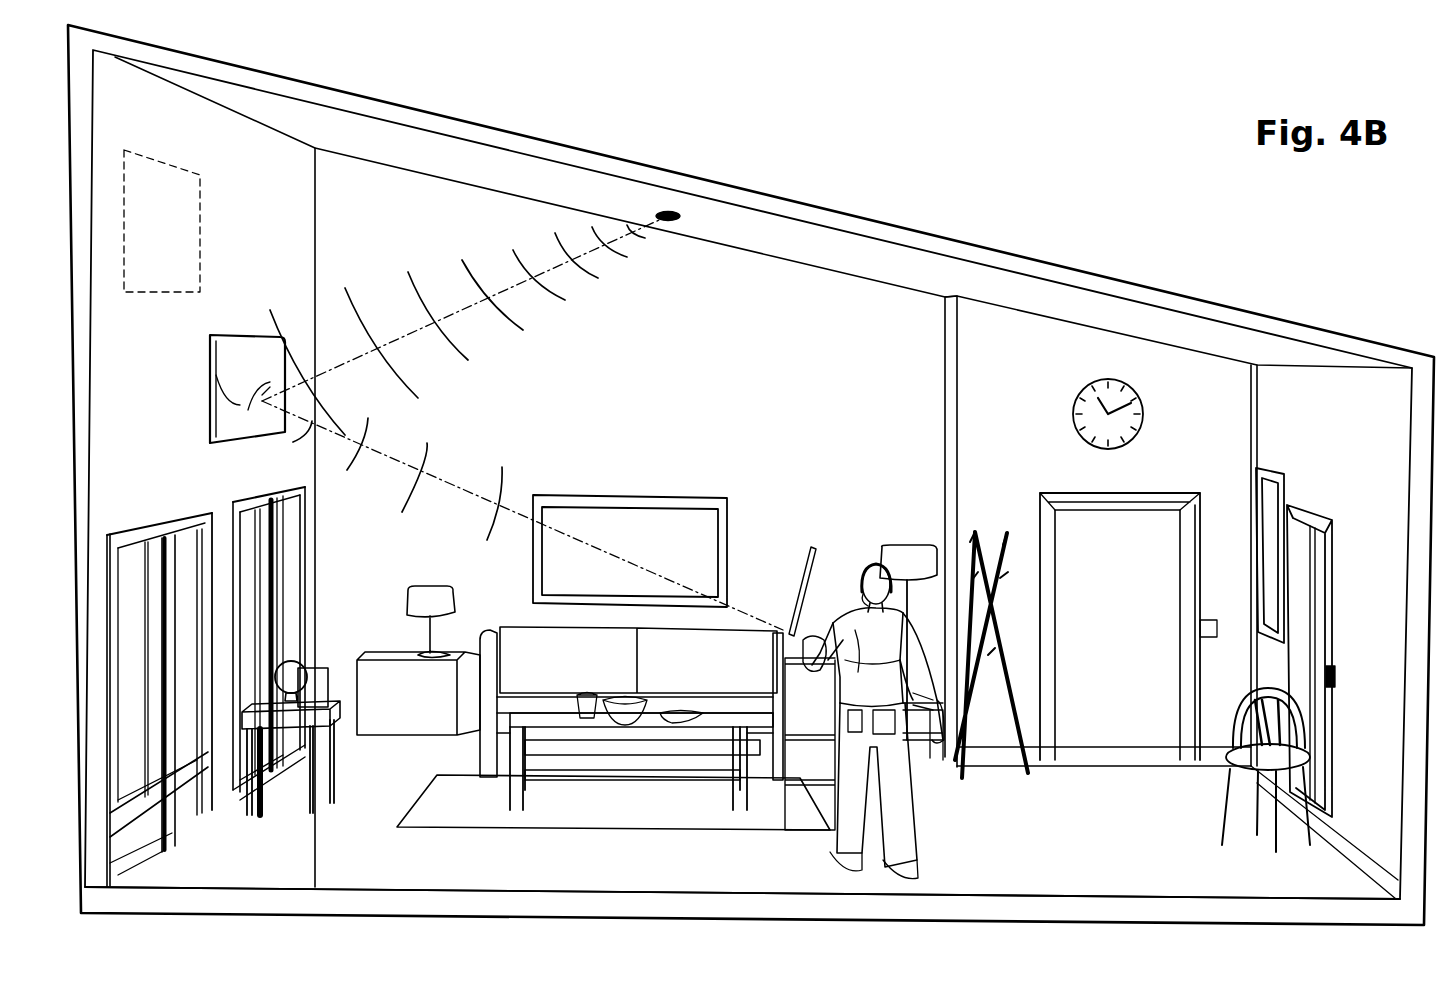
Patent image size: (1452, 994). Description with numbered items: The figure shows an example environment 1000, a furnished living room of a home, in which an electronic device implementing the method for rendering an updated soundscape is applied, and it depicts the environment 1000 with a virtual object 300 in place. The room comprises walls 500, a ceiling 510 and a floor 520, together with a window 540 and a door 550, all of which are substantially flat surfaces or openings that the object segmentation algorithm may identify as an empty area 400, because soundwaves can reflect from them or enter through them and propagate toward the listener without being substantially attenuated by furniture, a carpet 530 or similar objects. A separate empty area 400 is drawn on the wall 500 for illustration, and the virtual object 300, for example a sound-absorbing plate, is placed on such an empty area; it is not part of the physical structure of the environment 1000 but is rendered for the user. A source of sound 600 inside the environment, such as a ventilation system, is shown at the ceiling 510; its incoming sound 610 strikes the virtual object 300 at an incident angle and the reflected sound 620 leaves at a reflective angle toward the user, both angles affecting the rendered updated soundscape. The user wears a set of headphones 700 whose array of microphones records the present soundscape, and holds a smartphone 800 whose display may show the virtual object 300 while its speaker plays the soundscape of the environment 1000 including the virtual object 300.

The environment 1000 is at (1097, 148).
The virtual object 300 is at (212, 390).
The empty area 400 is at (187, 212).
The wall 500 is at (290, 285).
The ceiling 510 is at (493, 177).
The floor 520 is at (1083, 859).
The carpet 530 is at (645, 819).
The window 540 is at (189, 545).
The door 550 is at (1140, 672).
The source of sound 600 is at (672, 210).
The incoming sound 610 is at (590, 253).
The reflected sound 620 is at (450, 477).
The set of headphones 700 is at (860, 578).
The smartphone 800 is at (802, 608).